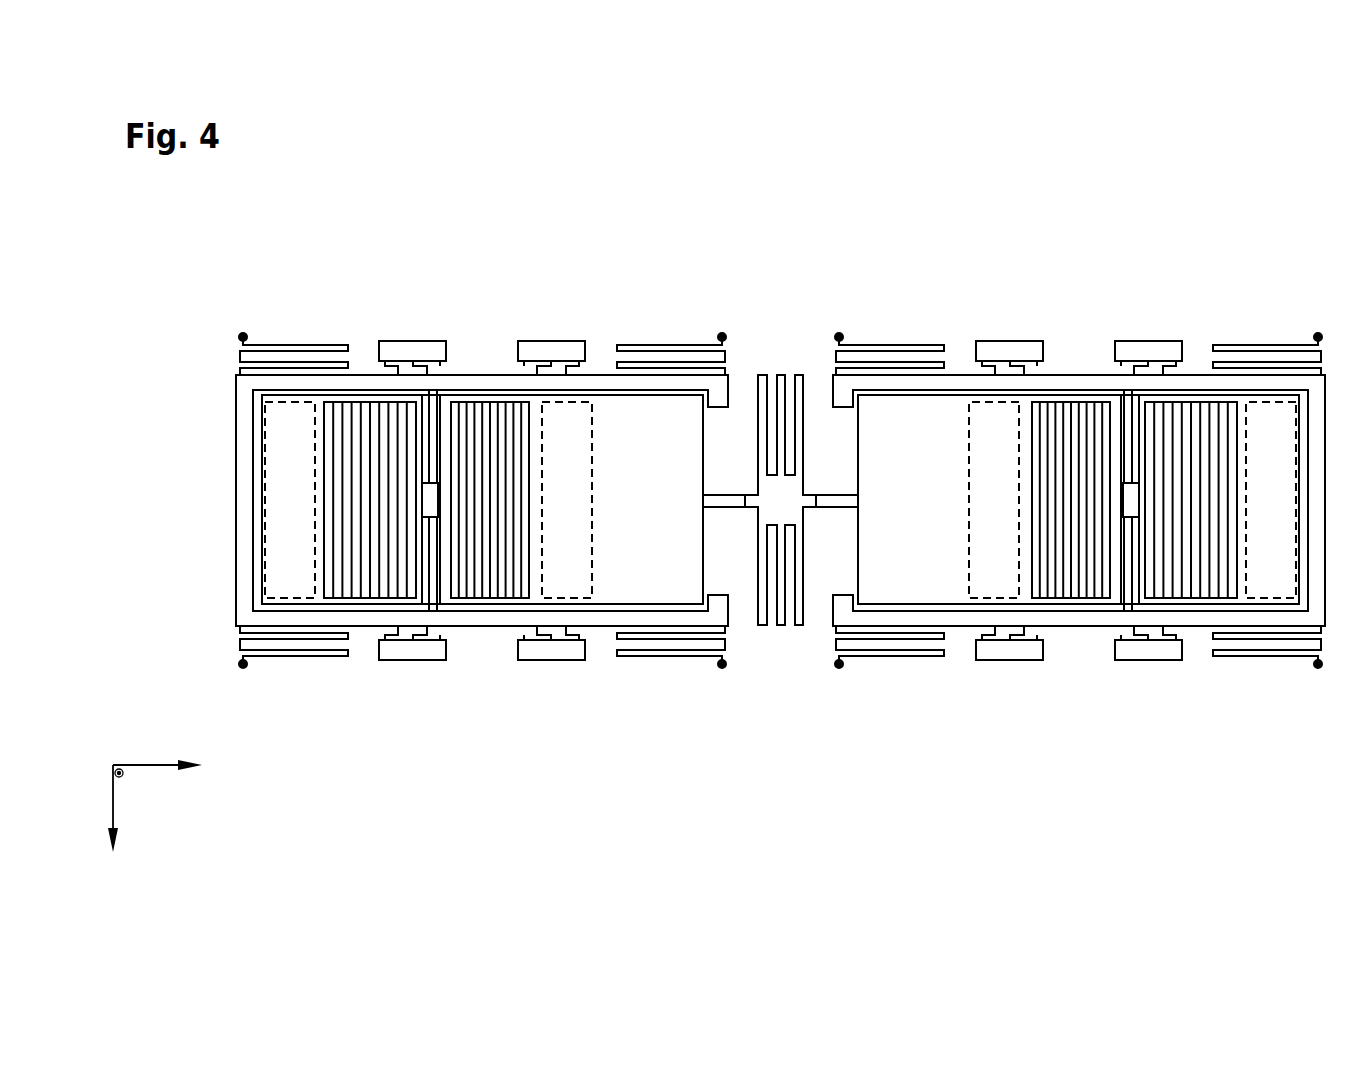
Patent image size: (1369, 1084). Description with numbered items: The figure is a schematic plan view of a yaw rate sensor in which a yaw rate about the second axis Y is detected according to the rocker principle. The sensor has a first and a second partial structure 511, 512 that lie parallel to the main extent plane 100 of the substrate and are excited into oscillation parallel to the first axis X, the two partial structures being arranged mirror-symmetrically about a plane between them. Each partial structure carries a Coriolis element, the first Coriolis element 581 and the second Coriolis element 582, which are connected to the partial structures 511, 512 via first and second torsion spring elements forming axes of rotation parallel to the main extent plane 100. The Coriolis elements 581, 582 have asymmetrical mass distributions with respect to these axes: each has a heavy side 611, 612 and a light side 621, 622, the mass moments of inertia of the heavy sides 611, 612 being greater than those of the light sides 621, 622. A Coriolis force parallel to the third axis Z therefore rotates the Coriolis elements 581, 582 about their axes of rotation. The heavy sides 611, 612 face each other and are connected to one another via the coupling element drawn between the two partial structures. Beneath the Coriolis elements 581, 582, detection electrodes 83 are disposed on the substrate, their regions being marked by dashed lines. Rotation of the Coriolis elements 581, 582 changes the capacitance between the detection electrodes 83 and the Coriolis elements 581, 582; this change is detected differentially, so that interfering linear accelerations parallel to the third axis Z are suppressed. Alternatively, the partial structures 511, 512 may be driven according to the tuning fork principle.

The main extent plane 100 is at (193, 840).
The first partial structure 511 is at (488, 380).
The second partial structure 512 is at (1085, 380).
The first Coriolis element 581 is at (262, 528).
The second Coriolis element 582 is at (1318, 418).
The heavy side 611 is at (650, 410).
The heavy side 612 is at (928, 410).
The light side 621 is at (290, 403).
The light side 622 is at (1262, 403).
The detection electrodes 83 is at (283, 582).